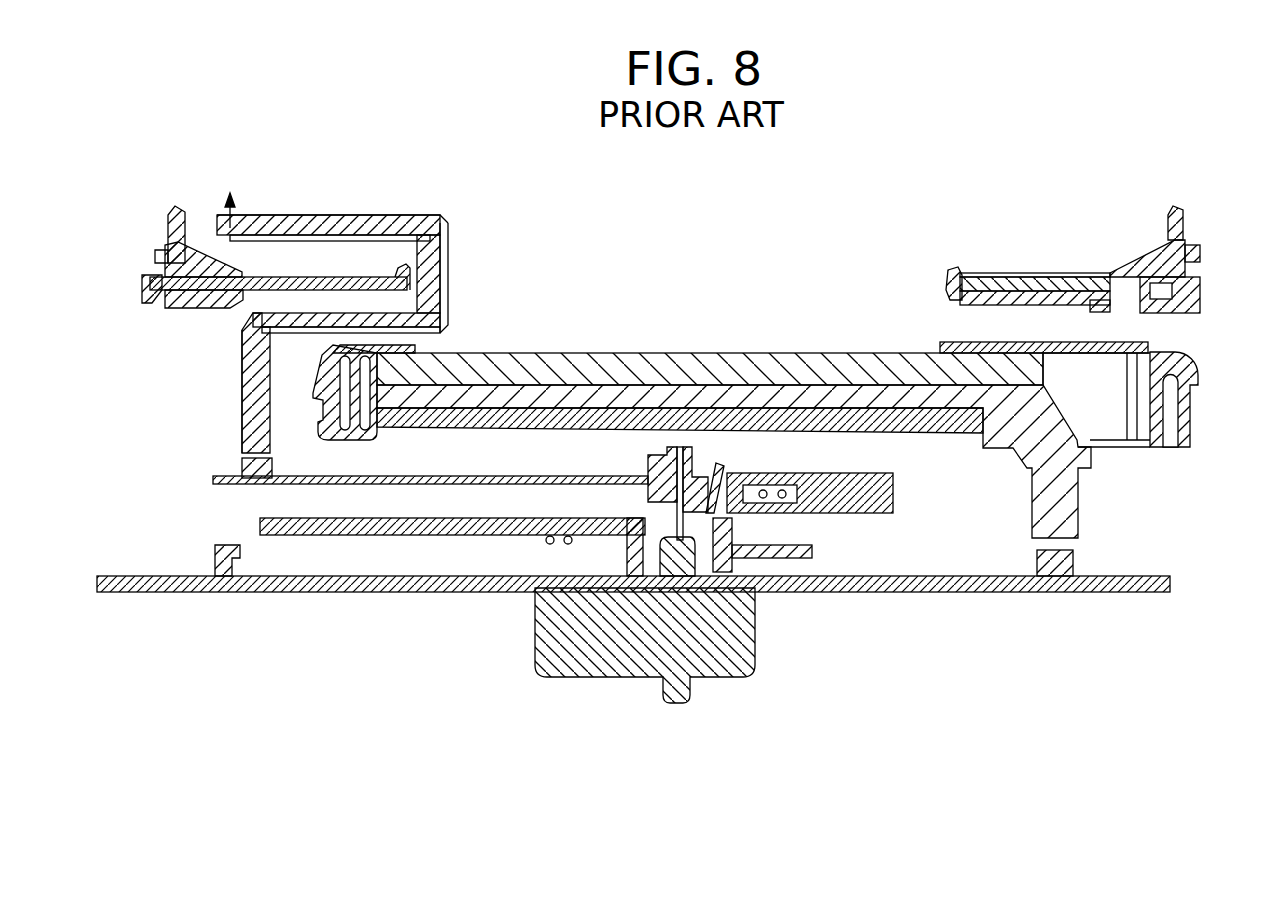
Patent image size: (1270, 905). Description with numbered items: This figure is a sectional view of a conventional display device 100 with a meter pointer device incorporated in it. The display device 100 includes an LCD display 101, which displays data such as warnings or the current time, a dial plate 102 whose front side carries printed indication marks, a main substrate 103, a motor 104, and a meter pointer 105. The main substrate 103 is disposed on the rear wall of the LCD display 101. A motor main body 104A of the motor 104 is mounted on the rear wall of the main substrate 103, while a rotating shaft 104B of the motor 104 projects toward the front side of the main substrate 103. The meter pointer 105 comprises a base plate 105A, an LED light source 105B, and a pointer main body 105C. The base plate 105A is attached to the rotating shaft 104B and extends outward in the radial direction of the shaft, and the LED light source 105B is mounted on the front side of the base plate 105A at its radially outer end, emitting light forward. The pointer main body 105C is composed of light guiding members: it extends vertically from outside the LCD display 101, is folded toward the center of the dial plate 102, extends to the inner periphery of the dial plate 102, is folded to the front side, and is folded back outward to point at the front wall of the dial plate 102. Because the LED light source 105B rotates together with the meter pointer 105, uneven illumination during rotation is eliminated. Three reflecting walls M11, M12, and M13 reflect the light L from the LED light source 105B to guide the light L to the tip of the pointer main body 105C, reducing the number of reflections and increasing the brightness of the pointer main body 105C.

The display device 100 is at (1160, 182).
The LCD display 101 is at (830, 354).
The dial plate 102 is at (1056, 273).
The main substrate 103 is at (241, 586).
The motor 104 is at (625, 680).
The motor main body 104A is at (735, 641).
The rotating shaft 104B is at (650, 507).
The meter pointer 105 is at (1125, 810).
The base plate 105A is at (220, 487).
The LED light source 105B is at (242, 462).
The pointer main body 105C is at (243, 388).
The light L is at (242, 423).
The reflecting wall M11 is at (242, 350).
The reflecting wall M12 is at (446, 303).
The reflecting wall M13 is at (413, 219).